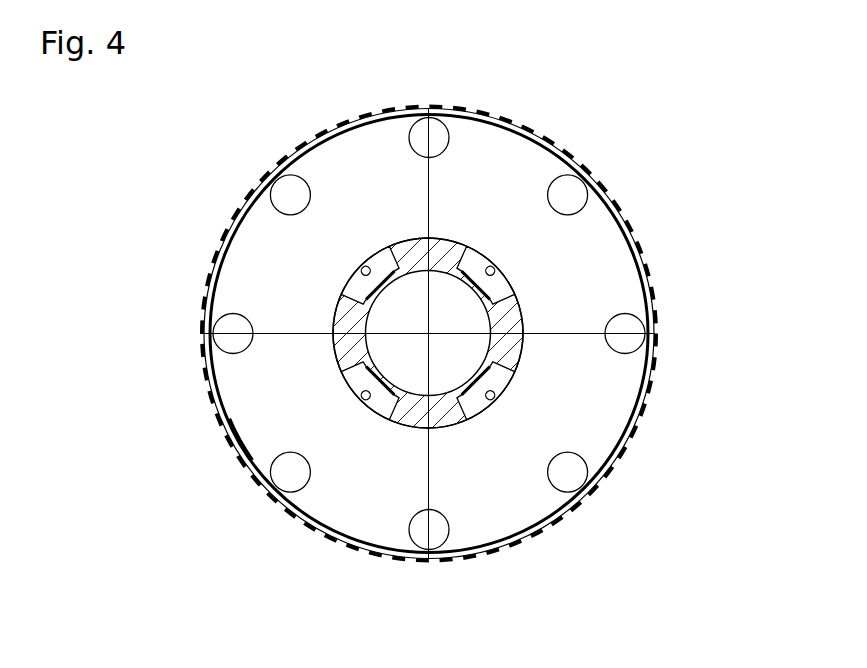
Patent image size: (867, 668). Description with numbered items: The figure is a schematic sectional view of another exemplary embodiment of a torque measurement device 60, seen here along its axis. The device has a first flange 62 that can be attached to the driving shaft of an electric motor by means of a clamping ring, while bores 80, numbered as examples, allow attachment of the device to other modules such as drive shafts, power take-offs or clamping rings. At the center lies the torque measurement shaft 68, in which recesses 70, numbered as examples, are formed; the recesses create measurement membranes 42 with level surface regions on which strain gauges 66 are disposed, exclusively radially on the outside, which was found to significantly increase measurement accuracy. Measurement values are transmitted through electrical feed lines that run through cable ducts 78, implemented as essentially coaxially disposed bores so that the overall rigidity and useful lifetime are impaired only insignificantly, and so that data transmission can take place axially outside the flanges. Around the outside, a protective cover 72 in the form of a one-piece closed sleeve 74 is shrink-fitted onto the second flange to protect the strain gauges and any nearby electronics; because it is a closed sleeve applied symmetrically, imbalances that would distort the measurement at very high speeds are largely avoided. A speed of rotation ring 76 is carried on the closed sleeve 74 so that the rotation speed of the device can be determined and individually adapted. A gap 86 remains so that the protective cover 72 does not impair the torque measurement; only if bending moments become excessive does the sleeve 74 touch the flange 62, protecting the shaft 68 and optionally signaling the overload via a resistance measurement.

The torque measurement device 60 is at (230, 155).
The first flange 62 is at (575, 270).
The strain gauges 66 is at (478, 287).
The torque measurement shaft 68 is at (443, 410).
The recesses 70 is at (468, 262).
The protective cover 72 is at (313, 140).
The closed sleeve 74 is at (212, 258).
The speed of rotation ring 76 is at (198, 322).
The cable ducts 78 is at (492, 396).
The bores 80 is at (290, 473).
The gap 86 is at (217, 423).
The measurement membranes 42 is at (366, 362).